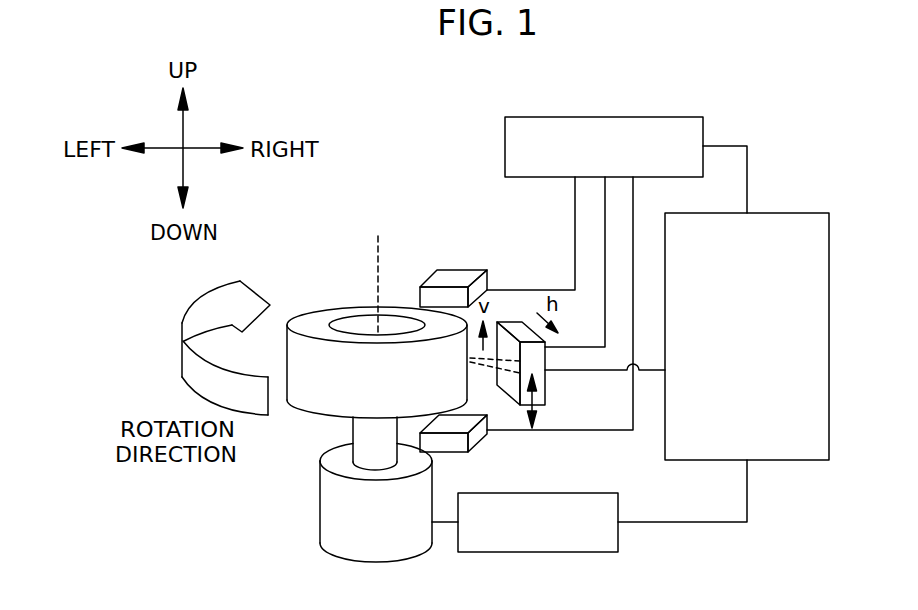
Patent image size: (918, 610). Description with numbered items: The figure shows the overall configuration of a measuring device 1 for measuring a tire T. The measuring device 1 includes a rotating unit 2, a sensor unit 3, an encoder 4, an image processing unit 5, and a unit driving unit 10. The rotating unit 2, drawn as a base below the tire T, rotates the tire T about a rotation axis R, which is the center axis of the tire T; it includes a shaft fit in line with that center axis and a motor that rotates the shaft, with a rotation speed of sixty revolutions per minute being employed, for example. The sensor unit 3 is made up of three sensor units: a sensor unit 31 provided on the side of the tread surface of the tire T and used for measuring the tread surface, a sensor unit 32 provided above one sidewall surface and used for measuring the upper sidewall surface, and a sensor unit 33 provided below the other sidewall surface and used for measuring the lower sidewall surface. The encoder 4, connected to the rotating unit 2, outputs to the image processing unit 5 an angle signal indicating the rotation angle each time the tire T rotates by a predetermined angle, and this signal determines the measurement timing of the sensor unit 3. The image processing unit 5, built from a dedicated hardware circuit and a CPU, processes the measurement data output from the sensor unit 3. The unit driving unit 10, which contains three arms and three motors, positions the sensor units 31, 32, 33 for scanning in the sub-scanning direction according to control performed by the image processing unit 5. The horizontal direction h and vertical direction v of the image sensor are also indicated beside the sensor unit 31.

The measuring device 1 is at (758, 138).
The rotating unit 2 is at (335, 507).
The sensor unit 3 is at (517, 356).
The sensor unit 31 is at (545, 386).
The sensor unit 32 is at (447, 270).
The sensor unit 33 is at (453, 452).
The encoder 4 is at (618, 540).
The image processing unit 5 is at (765, 213).
The unit driving unit 10 is at (608, 117).
The tire T is at (296, 290).
The rotation axis R is at (377, 272).